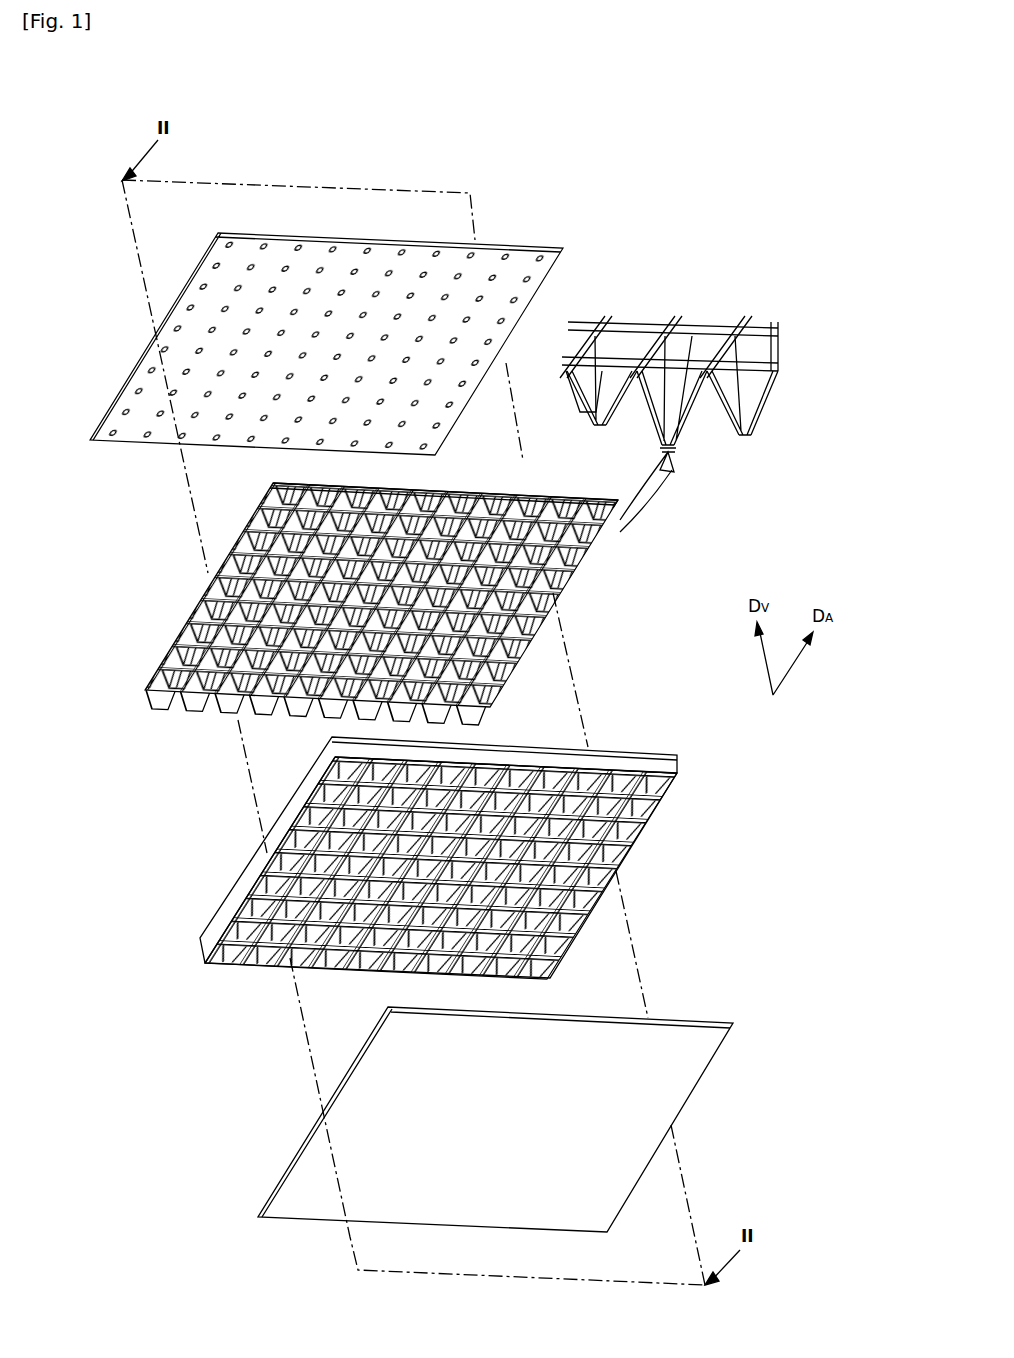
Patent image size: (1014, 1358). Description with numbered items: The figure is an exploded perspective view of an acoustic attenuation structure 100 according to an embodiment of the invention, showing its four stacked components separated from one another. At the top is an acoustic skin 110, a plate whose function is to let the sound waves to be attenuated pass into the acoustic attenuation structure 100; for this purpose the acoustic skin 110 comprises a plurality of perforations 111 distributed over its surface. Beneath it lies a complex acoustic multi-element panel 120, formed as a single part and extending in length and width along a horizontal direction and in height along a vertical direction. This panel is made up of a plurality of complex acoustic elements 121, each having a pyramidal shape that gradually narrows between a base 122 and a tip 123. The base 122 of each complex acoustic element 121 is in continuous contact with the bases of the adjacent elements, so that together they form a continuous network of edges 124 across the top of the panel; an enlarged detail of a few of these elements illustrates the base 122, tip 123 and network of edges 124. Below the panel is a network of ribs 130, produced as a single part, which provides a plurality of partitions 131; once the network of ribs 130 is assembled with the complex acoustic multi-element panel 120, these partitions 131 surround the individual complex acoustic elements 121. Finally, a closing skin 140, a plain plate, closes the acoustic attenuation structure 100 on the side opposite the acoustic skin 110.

The acoustic attenuation structure 100 is at (620, 162).
The acoustic skin 110 is at (515, 240).
The perforations 111 is at (480, 298).
The complex acoustic multi-element panel 120 is at (560, 495).
The complex acoustic element 121 is at (227, 700).
The base 122 is at (693, 367).
The tip 123 is at (676, 450).
The network of edges 124 is at (722, 335).
The network of ribs 130 is at (622, 755).
The partitions 131 is at (262, 955).
The closing skin 140 is at (690, 1022).